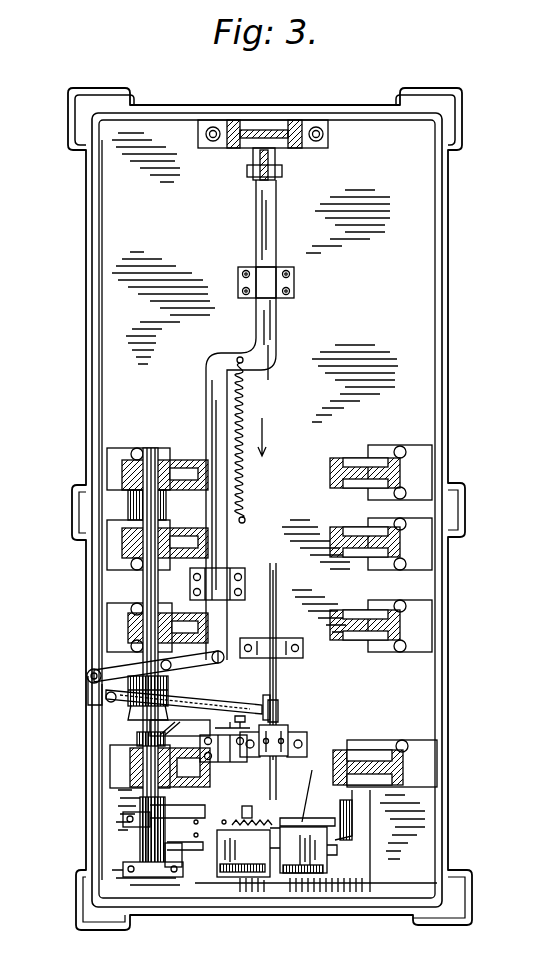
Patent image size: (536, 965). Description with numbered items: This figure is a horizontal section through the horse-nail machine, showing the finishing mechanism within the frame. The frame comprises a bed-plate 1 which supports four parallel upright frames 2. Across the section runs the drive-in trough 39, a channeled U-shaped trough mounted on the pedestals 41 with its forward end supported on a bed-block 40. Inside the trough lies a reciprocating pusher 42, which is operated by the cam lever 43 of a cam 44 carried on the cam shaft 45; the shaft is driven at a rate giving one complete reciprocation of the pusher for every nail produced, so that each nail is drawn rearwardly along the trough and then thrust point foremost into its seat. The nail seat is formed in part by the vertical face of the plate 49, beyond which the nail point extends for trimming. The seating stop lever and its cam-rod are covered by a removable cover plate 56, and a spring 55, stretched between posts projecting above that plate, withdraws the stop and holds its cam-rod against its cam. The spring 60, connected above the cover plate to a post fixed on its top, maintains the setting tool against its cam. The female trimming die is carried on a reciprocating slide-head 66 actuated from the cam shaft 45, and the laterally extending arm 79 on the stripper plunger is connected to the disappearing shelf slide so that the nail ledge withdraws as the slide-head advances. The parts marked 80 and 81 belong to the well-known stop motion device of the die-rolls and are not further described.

The bed-plate 1 is at (422, 300).
The upright frames 2 is at (196, 476).
The drive-in trough 39 is at (278, 704).
The bed-block 40 is at (360, 875).
The pedestals 41 is at (300, 732).
The reciprocating pusher 42 is at (270, 566).
The cam lever 43 is at (243, 702).
The cam 44 is at (97, 698).
The cam shaft 45 is at (147, 582).
The plate 49 is at (312, 770).
The spring 55 is at (232, 812).
The cover plate 56 is at (223, 821).
The spring 60 is at (289, 859).
The slide-head 66 is at (222, 870).
The laterally extending arm 79 is at (336, 838).
The stop motion device part 80 is at (93, 690).
The stop motion device part 81 is at (207, 420).